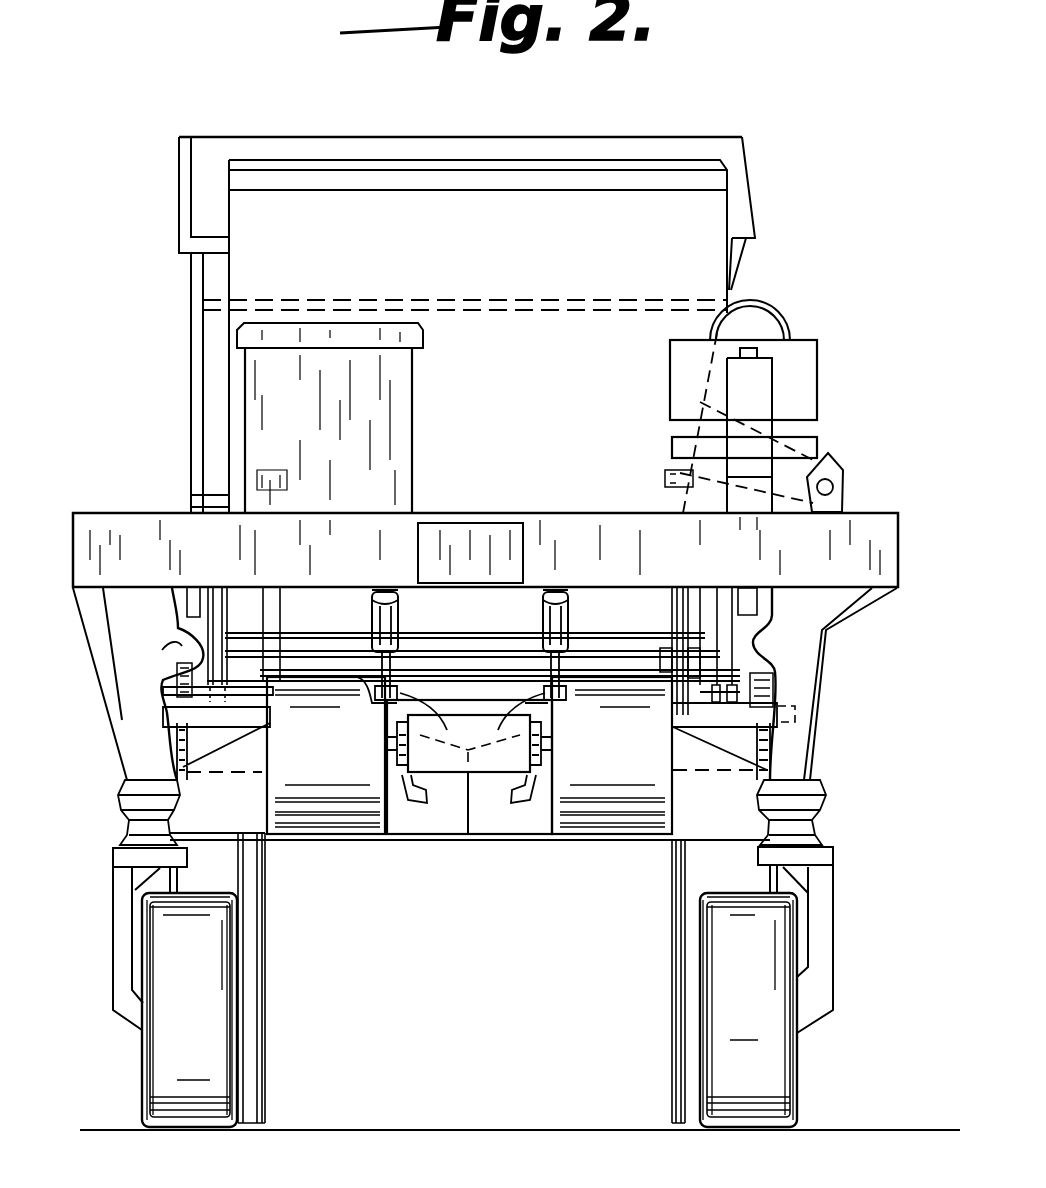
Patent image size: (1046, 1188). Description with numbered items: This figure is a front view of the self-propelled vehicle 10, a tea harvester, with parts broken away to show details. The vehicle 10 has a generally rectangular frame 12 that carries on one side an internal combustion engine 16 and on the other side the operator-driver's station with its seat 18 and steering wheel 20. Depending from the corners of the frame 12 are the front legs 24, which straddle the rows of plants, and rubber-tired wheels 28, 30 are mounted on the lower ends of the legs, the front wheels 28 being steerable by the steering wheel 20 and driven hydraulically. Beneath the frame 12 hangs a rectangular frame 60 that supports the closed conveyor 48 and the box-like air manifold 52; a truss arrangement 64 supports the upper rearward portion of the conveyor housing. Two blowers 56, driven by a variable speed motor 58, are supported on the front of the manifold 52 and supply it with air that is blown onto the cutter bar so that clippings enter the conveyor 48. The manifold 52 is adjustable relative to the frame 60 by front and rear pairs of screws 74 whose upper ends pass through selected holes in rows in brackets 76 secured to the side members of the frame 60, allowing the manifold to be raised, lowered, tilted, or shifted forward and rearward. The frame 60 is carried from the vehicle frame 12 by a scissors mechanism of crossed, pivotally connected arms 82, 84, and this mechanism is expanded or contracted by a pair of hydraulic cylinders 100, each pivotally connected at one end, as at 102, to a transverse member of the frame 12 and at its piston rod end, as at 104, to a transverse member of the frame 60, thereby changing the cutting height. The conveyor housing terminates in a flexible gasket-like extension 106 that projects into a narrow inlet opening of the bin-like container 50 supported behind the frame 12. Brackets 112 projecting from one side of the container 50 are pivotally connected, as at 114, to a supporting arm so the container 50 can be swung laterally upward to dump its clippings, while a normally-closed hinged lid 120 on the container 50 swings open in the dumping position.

The self-propelled vehicle 10 is at (866, 353).
The frame 12 is at (900, 542).
The internal combustion engine 16 is at (414, 441).
The operator-driver's seat 18 is at (820, 442).
The steering wheel 20 is at (768, 323).
The front legs 24 is at (126, 726).
The front wheels 28 is at (238, 1040).
The rear wheels 30 is at (265, 1002).
The closed conveyor 48 is at (224, 385).
The container 50 is at (752, 165).
The air manifold 52 is at (488, 838).
The blowers 56 is at (356, 838).
The variable speed motor 58 is at (441, 770).
The rectangular frame 60 is at (181, 630).
The truss arrangement 64 is at (288, 632).
The screws 74 is at (178, 664).
The brackets 76 is at (178, 695).
The arms 82 is at (212, 627).
The arms 84 is at (227, 628).
The hydraulic cylinders 100 is at (400, 618).
The pivotal connection 102 is at (392, 572).
The pivotal connection 104 is at (469, 759).
The flexible extension 106 is at (668, 160).
The brackets 112 is at (818, 396).
The pivotal connection 114 is at (833, 484).
The hinged lid 120 is at (365, 137).